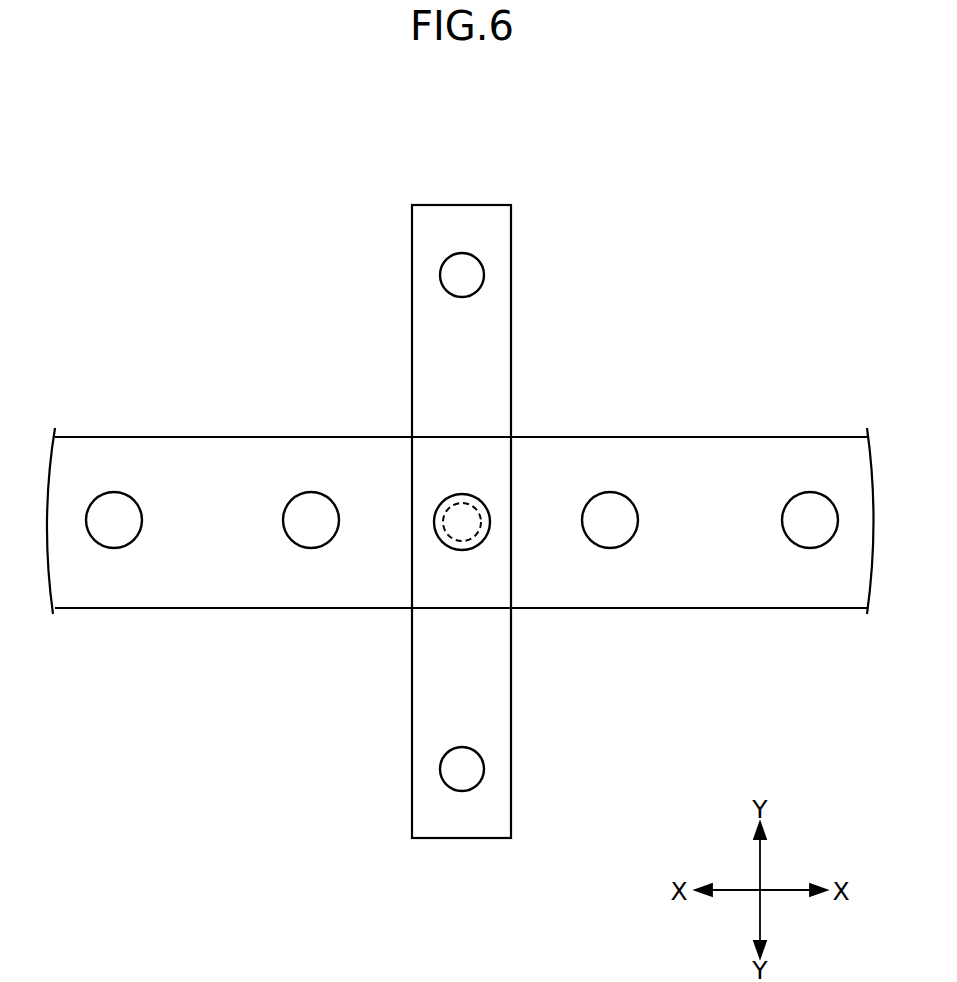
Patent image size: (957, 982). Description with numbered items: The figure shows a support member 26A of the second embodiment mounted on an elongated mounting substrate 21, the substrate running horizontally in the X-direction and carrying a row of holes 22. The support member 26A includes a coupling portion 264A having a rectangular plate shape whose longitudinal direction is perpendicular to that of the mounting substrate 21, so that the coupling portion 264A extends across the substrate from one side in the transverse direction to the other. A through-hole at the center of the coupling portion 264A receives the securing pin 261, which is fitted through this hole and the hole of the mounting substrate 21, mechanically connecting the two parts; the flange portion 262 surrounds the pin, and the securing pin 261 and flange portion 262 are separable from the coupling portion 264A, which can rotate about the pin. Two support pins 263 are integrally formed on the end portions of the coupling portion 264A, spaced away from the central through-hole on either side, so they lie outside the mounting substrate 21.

The mounting substrate 21 is at (202, 464).
The through hole 22 is at (120, 533).
The support member 26A is at (511, 244).
The coupling portion 264A is at (495, 357).
The support pins 263 is at (455, 277).
The flange portion 262 is at (452, 548).
The securing pin 261 is at (458, 495).